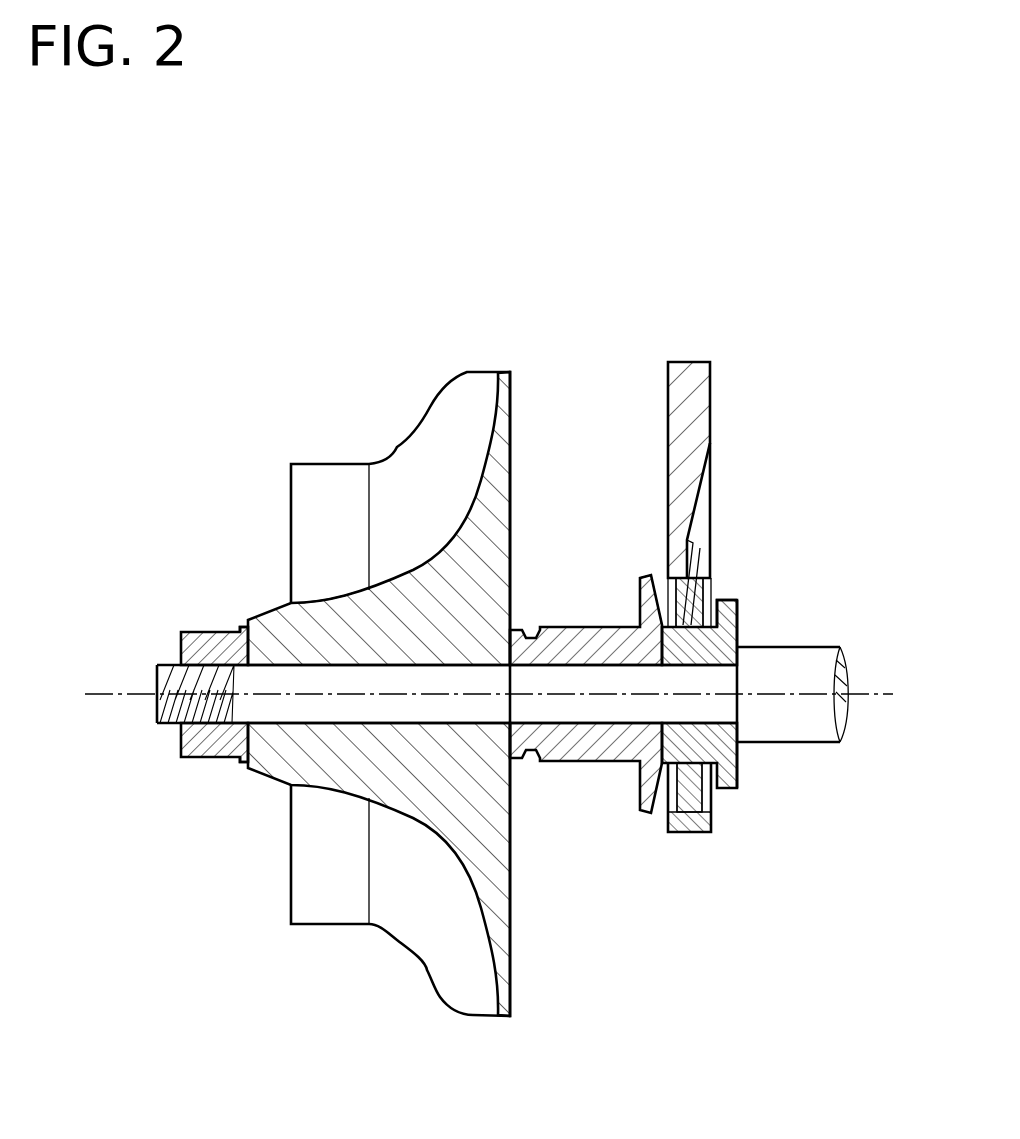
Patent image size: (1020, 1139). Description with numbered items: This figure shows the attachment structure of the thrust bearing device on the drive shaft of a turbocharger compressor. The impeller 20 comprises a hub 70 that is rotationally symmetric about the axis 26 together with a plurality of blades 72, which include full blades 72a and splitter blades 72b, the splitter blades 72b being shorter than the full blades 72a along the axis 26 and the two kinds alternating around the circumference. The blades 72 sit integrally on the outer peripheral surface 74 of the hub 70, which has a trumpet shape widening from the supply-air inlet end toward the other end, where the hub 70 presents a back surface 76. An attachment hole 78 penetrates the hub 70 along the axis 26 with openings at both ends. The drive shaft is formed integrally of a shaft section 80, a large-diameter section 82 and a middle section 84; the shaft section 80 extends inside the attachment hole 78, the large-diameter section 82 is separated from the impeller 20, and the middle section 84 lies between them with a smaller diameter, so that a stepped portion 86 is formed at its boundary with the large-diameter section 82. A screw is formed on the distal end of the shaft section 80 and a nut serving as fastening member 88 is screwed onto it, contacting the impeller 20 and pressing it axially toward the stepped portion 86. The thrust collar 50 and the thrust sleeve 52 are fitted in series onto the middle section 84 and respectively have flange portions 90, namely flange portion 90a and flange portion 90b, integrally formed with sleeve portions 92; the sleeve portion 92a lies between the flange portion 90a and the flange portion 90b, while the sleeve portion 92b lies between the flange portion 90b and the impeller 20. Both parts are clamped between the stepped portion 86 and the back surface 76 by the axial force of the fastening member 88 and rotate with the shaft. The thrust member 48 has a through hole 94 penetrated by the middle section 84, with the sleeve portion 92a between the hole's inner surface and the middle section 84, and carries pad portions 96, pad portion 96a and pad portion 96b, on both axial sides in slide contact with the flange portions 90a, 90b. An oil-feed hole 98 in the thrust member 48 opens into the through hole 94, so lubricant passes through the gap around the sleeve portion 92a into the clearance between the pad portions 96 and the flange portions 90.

The impeller 20 is at (398, 669).
The axis 26 is at (882, 690).
The thrust member 48 is at (708, 492).
The thrust collar 50 is at (705, 625).
The thrust sleeve 52 is at (700, 555).
The hub 70 is at (288, 677).
The blades 72 is at (403, 668).
The full blades 72a is at (333, 480).
The splitter blades 72b is at (445, 445).
The outer peripheral surface 74 is at (340, 600).
The back surface 76 is at (513, 457).
The attachment hole 78 is at (352, 725).
The shaft section 80 is at (238, 630).
The large-diameter section 82 is at (787, 665).
The middle section 84 is at (568, 712).
The stepped portion 86 is at (725, 742).
The fastening member 88 is at (181, 645).
The flange portions 90 is at (729, 536).
The flange portion 90a is at (730, 600).
The flange portion 90b is at (650, 578).
The sleeve portions 92 is at (668, 545).
The sleeve portion 92a is at (700, 612).
The sleeve portion 92b is at (543, 628).
The through hole 94 is at (714, 660).
The pad portions 96 is at (719, 840).
The pad portion 96a is at (706, 792).
The pad portion 96b is at (673, 792).
The oil-feed hole 98 is at (672, 578).